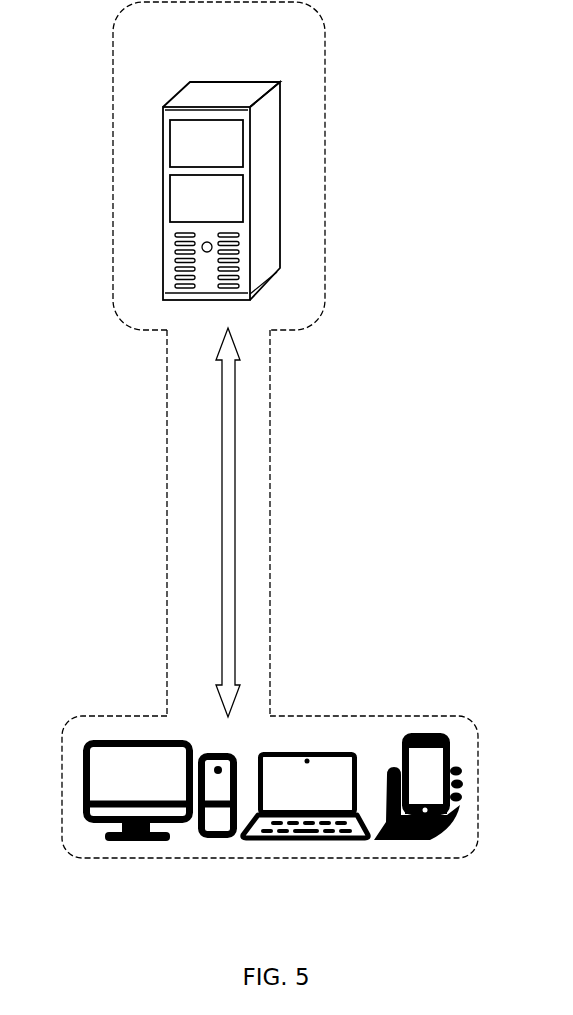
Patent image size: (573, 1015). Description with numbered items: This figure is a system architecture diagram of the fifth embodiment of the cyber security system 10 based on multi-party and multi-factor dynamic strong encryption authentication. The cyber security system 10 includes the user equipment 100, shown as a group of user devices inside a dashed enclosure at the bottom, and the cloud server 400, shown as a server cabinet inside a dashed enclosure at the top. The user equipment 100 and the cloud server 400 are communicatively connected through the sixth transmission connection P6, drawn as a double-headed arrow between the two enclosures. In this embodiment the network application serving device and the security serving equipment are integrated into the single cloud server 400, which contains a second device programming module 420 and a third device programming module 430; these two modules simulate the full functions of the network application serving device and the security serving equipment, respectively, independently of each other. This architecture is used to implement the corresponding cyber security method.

The cyber security system 10 is at (402, 450).
The cloud server 400 is at (222, 92).
The second device programming module 420 is at (206, 143).
The third device programming module 430 is at (206, 198).
The sixth transmission connection P6 is at (211, 522).
The user equipment 100 is at (274, 821).